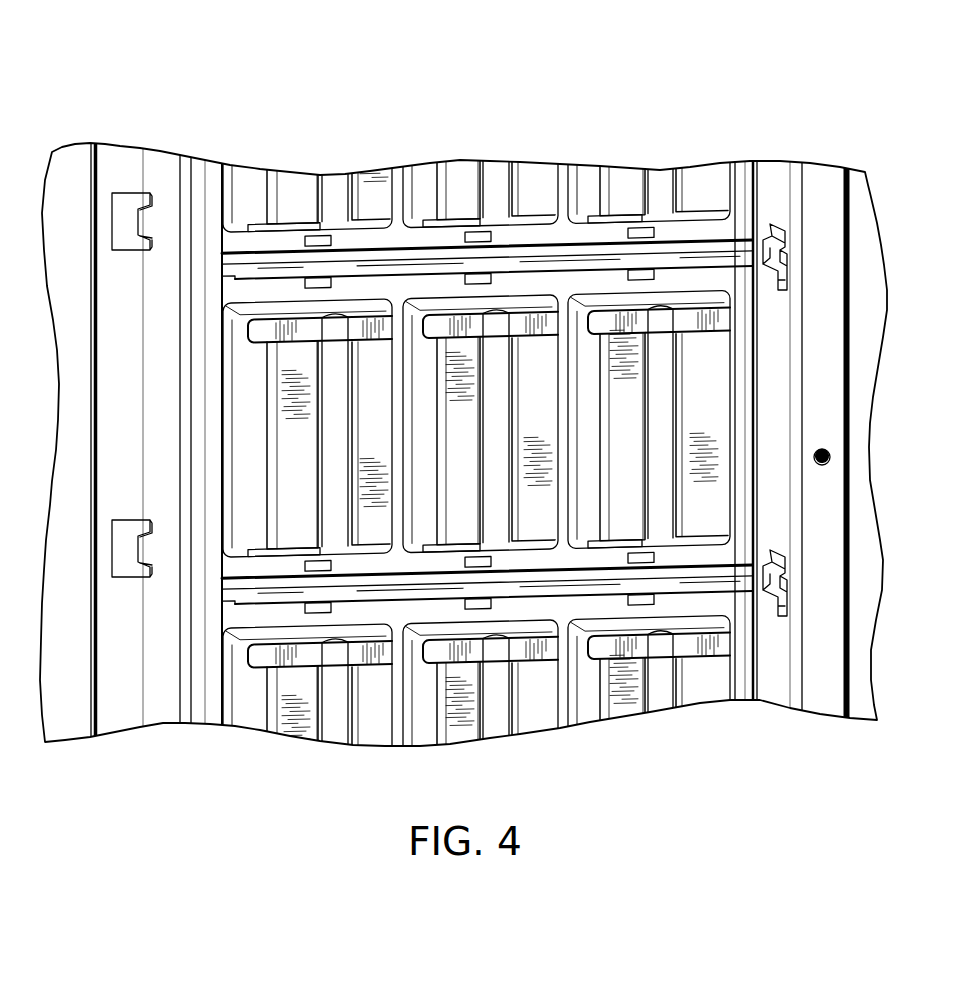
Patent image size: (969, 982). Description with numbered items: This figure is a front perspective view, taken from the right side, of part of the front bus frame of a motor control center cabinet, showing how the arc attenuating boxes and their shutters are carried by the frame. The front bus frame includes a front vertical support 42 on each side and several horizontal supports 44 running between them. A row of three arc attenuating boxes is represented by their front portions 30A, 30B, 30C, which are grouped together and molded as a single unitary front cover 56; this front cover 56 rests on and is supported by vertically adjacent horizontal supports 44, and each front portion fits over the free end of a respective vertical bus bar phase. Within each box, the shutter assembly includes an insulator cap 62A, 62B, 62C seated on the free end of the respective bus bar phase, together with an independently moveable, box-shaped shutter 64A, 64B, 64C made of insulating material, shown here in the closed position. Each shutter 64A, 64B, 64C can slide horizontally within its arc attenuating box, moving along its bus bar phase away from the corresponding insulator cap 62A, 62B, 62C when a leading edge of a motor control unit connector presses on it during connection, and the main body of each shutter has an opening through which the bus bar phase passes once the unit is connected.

The front vertical support 42 is at (112, 157).
The horizontal support 44 is at (282, 255).
The front cover 56 is at (427, 441).
The front portion of arc attenuating box A 30A is at (315, 462).
The front portion of arc attenuating box B 30B is at (487, 455).
The front portion of arc attenuating box C 30C is at (649, 440).
The insulator cap 62A is at (337, 552).
The insulator cap 62B is at (498, 548).
The insulator cap 62C is at (663, 545).
The box-shaped shutter 64A is at (297, 522).
The box-shaped shutter 64B is at (457, 522).
The box-shaped shutter 64C is at (617, 517).